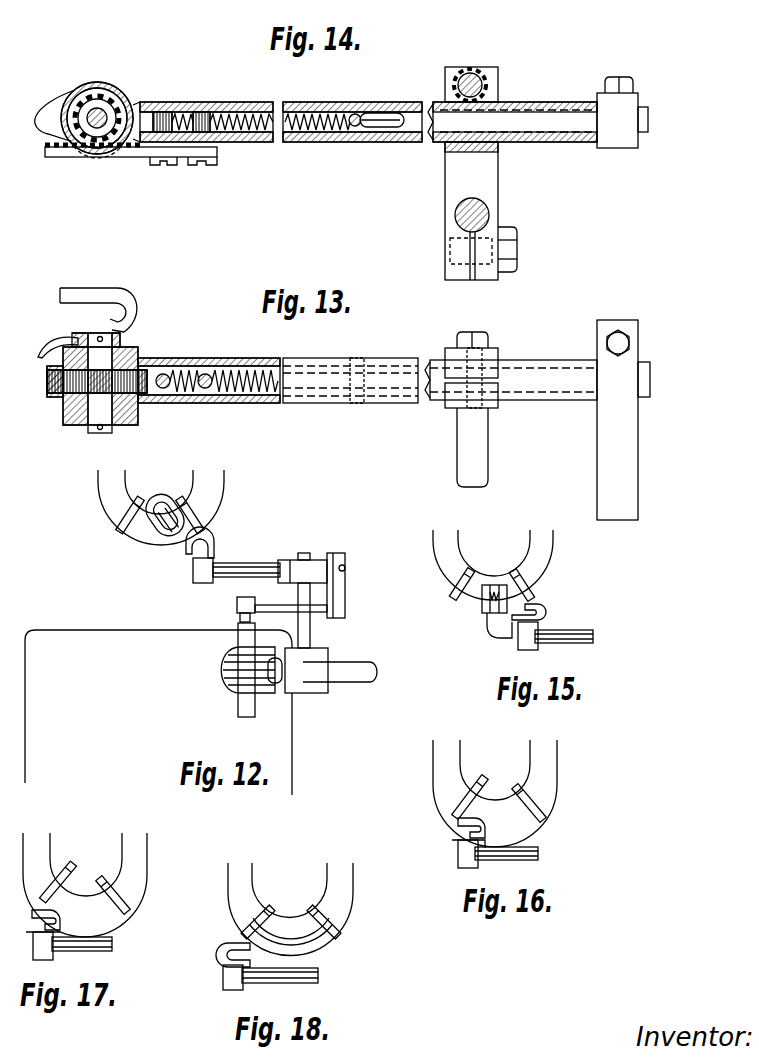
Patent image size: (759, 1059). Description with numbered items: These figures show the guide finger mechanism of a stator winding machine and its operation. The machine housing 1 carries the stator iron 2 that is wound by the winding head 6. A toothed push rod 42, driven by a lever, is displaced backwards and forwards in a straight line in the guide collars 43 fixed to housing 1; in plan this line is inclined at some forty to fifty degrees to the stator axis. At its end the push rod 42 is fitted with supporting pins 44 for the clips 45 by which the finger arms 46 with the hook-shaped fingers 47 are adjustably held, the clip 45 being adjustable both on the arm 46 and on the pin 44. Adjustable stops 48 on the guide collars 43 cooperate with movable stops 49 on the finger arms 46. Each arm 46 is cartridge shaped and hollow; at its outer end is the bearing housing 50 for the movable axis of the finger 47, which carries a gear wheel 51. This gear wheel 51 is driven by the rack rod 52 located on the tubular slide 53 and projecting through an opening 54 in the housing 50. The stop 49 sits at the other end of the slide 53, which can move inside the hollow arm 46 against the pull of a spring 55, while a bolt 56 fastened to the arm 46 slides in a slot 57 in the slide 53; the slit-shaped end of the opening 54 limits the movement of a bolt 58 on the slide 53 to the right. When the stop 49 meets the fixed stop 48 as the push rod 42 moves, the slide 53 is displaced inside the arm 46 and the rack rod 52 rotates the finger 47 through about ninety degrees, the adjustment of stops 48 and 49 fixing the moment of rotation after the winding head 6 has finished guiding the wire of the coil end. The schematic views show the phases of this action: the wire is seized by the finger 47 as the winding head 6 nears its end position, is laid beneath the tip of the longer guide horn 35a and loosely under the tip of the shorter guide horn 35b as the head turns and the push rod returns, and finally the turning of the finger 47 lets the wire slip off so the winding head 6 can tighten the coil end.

In FIG. 12, the machine housing 1 is at (158, 712).
In FIG. 12, the stator iron 2 is at (98, 501).
In FIG. 12, the winding head 6 is at (160, 498).
In FIG. 12, the longer guide horn 35a is at (197, 521).
In FIG. 12, the shorter guide horn 35b is at (126, 526).
In FIG. 12, the push rod 42 is at (340, 682).
In FIG. 12, the guide collars 43 is at (233, 680).
In FIG. 14, the supporting pins 44 is at (458, 212).
In FIG. 13, the supporting pins 44 is at (467, 445).
In FIG. 12, the supporting pins 44 is at (311, 630).
In FIG. 14, the clips 45 is at (490, 184).
In FIG. 13, the clips 45 is at (488, 358).
In FIG. 14, the finger arms 46 is at (312, 142).
In FIG. 13, the finger arms 46 is at (327, 402).
In FIG. 12, the finger arms 46 is at (250, 570).
In FIG. 14, the hook-shaped fingers 47 is at (52, 112).
In FIG. 13, the hook-shaped fingers 47 is at (115, 292).
In FIG. 12, the hook-shaped fingers 47 is at (186, 562).
In FIG. 12, the adjustable stops 48 is at (237, 607).
In FIG. 14, the movable stops 49 is at (617, 137).
In FIG. 13, the movable stops 49 is at (605, 437).
In FIG. 12, the movable stops 49 is at (345, 562).
In FIG. 14, the bearing housing 50 is at (105, 88).
In FIG. 13, the bearing housing 50 is at (137, 412).
In FIG. 14, the gear wheel 51 is at (115, 108).
In FIG. 13, the gear wheel 51 is at (125, 375).
In FIG. 14, the rack rod 52 is at (135, 157).
In FIG. 13, the rack rod 52 is at (52, 397).
In FIG. 14, the tubular slide 53 is at (248, 136).
In FIG. 13, the tubular slide 53 is at (240, 398).
In FIG. 14, the opening 54 is at (68, 142).
In FIG. 14, the spring 55 is at (235, 102).
In FIG. 13, the spring 55 is at (277, 372).
In FIG. 14, the bolt 56 is at (350, 115).
In FIG. 13, the bolt 56 is at (362, 368).
In FIG. 14, the slot 57 is at (390, 115).
In FIG. 14, the bolt 58 is at (196, 165).
In FIG. 13, the bolt 58 is at (207, 378).